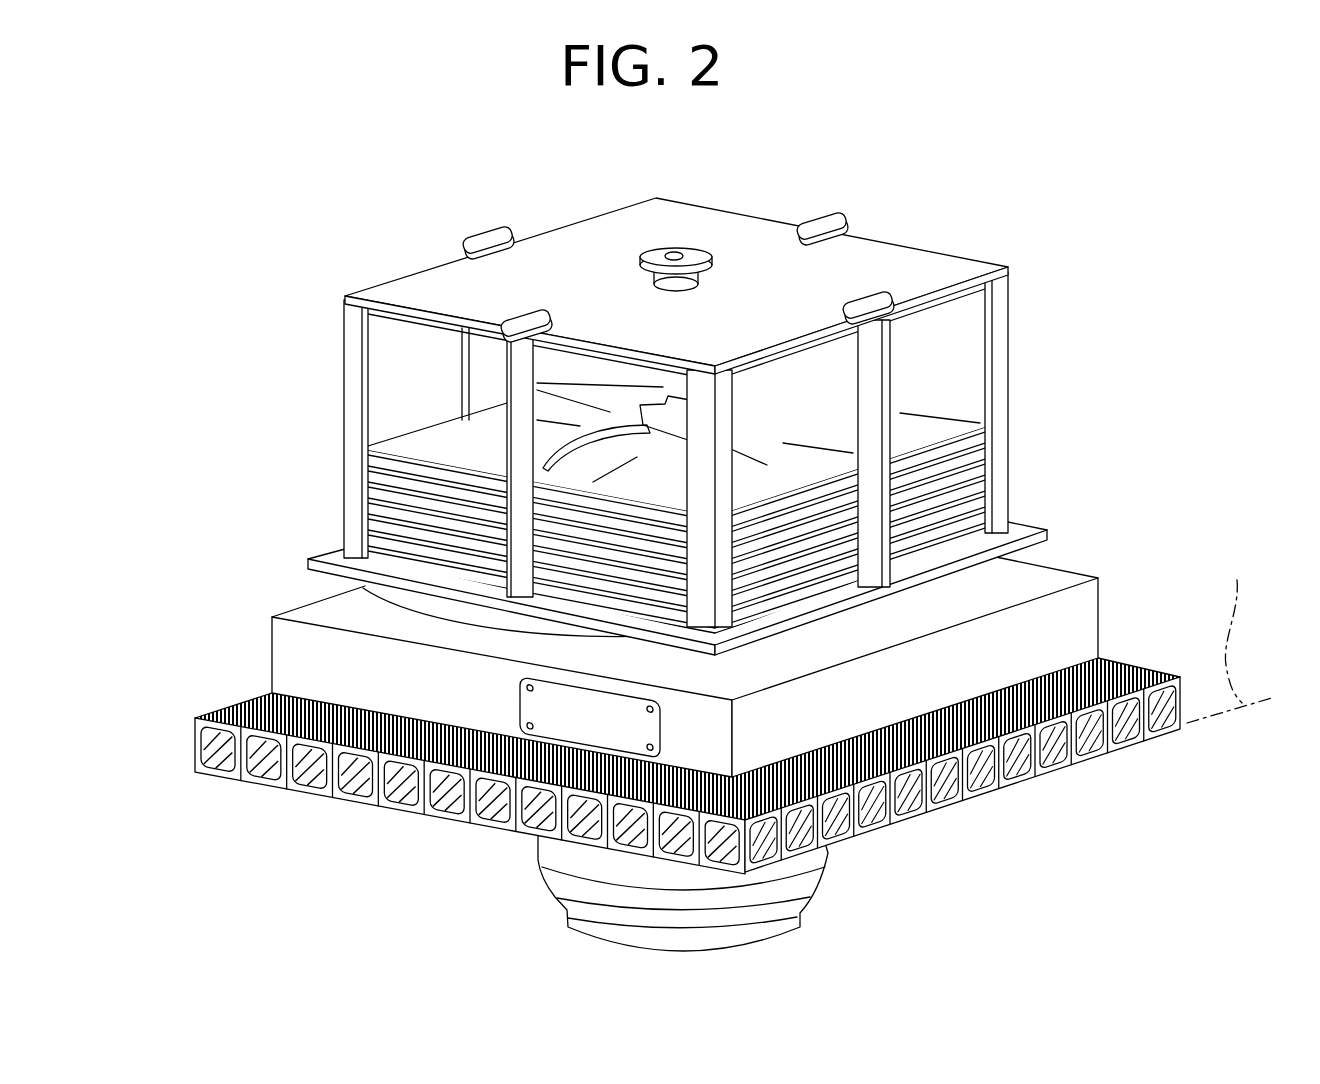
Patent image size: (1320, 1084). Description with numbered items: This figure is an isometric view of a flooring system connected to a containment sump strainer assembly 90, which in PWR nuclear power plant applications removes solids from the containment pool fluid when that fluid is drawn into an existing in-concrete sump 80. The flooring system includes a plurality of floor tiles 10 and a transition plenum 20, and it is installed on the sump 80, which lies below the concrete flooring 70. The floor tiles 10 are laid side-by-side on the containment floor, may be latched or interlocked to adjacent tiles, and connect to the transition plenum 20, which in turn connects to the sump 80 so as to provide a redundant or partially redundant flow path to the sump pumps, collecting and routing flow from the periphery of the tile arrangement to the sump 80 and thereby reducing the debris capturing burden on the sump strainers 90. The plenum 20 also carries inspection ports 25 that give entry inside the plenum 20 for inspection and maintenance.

The floor tiles 10 is at (247, 703).
The transition plenum 20 is at (1063, 567).
The inspection ports 25 is at (548, 718).
The concrete flooring 70 is at (1237, 583).
The sump 80 is at (802, 878).
The containment sump strainer assembly 90 is at (580, 246).